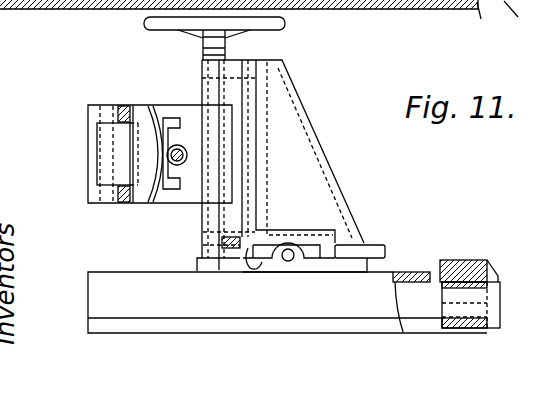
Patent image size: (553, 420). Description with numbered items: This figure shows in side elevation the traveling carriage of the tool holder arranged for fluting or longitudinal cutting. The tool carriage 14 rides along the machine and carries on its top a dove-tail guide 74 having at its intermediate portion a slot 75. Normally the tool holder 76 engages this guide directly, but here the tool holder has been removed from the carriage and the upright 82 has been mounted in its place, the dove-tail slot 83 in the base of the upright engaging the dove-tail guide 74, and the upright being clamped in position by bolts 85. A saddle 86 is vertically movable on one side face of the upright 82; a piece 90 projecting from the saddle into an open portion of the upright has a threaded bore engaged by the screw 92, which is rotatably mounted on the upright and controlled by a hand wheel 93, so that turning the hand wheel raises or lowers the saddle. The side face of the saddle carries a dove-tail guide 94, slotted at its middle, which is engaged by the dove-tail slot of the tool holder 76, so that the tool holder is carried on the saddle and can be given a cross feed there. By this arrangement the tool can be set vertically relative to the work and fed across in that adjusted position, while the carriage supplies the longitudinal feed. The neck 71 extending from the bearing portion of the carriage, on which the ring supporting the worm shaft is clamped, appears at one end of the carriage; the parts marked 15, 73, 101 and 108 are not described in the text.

The tool carriage 14 is at (152, 271).
The wall plate 15 is at (397, 9).
The neck 71 is at (493, 273).
The clamp 73 is at (314, 270).
The dove-tail guide 74 is at (302, 262).
The slot 75 is at (172, 145).
The tool holder 76 is at (97, 151).
The upright 82 is at (285, 118).
The dove-tail slot 83 is at (258, 268).
The bolts 85 is at (372, 258).
The saddle 86 is at (192, 170).
The piece 90 is at (207, 127).
The screw 92 is at (223, 73).
The hand wheel 93 is at (287, 25).
The dove-tail guide 94 is at (167, 123).
The support 101 is at (483, 24).
The member 108 is at (528, 20).